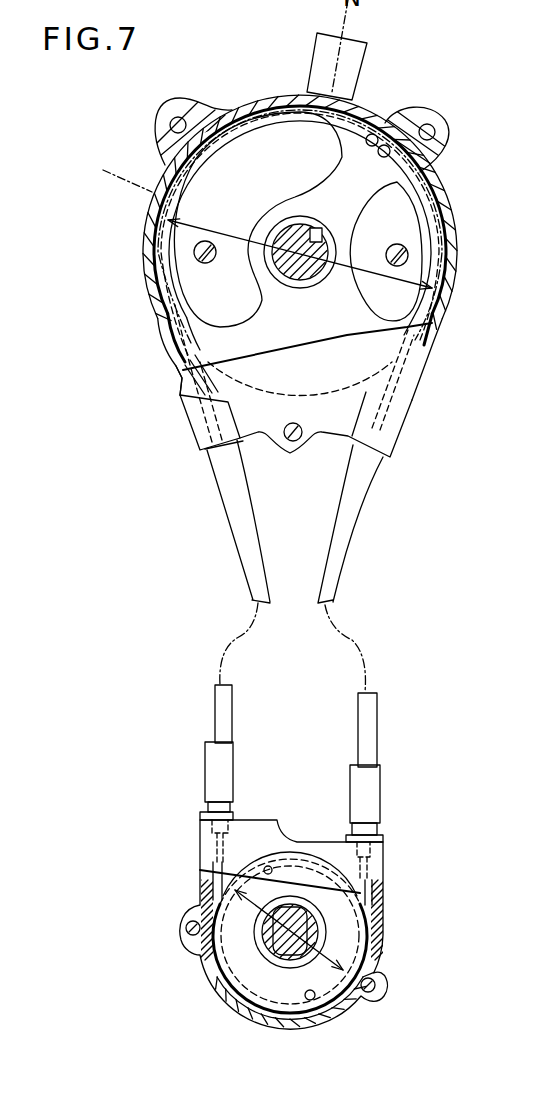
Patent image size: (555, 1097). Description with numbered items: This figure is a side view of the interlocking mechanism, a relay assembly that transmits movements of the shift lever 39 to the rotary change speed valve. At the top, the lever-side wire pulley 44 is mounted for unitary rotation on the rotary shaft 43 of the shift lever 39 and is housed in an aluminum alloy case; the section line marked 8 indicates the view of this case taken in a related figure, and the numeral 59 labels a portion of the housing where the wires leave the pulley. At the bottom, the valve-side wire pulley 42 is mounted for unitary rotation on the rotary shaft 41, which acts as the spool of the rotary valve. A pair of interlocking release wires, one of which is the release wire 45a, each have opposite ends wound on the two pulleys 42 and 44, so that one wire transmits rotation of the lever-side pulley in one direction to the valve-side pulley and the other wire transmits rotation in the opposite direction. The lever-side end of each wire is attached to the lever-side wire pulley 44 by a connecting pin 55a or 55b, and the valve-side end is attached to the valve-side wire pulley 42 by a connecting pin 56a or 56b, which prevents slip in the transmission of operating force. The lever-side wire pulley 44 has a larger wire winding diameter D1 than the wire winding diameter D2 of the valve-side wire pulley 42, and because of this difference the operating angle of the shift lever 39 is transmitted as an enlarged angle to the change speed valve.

The shift lever 39 is at (357, 62).
The lever-side wire pulley 44 is at (263, 122).
The rotary shaft 43 is at (290, 240).
The connecting pin 55a is at (378, 135).
The connecting pin 55b is at (388, 153).
The section line 8 is at (258, 226).
The wire winding diameter D1 is at (363, 273).
The cable guide portion 59 is at (163, 337).
The interlocking release wire 45a is at (240, 632).
The connecting pin 56b is at (270, 867).
The rotary shaft 41 is at (297, 927).
The valve-side wire pulley 42 is at (270, 987).
The connecting pin 56a is at (305, 1008).
The wire winding diameter D2 is at (340, 1000).